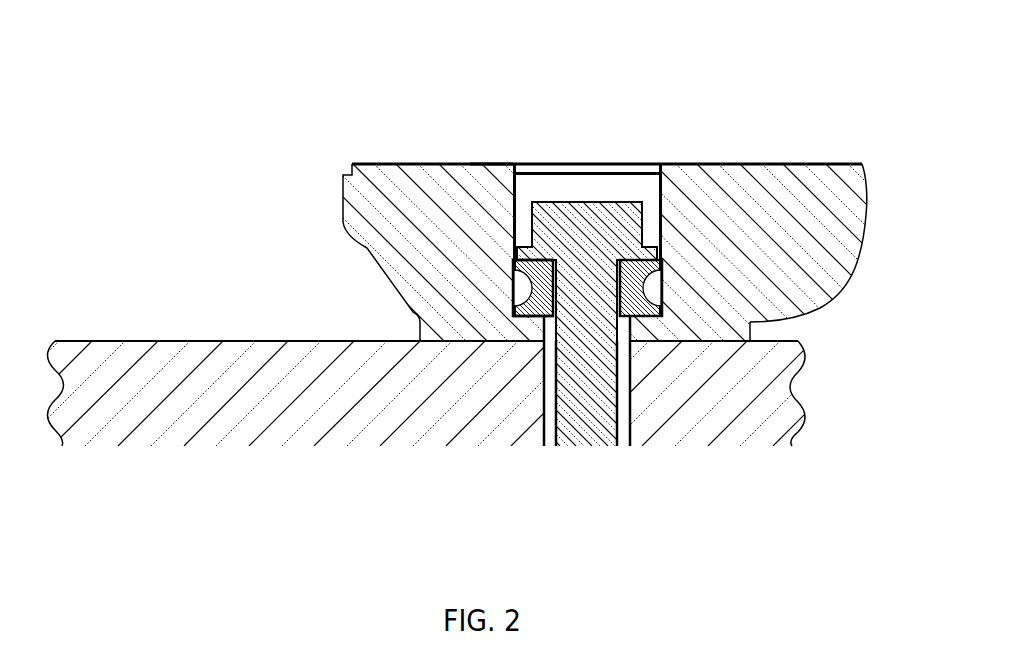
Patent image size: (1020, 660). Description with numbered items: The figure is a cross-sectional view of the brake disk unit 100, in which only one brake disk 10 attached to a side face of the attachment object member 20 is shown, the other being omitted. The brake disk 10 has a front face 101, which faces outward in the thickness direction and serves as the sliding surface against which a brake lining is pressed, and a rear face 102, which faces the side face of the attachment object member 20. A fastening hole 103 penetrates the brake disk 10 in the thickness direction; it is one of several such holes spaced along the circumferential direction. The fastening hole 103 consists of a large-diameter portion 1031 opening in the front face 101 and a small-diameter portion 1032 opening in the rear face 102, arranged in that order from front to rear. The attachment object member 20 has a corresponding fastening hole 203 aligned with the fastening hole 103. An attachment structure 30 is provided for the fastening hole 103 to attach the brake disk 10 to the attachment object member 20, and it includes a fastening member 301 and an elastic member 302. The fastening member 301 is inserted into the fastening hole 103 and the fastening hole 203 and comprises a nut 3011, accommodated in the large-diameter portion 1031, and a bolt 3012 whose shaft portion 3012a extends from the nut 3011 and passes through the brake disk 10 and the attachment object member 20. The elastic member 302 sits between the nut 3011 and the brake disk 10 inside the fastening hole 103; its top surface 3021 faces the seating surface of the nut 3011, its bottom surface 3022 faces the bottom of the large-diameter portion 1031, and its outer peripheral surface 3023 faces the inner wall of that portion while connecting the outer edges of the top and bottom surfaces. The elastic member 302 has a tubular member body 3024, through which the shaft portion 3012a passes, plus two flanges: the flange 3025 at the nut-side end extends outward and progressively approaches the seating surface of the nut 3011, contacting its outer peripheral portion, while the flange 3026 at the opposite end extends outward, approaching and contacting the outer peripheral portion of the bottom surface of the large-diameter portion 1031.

The brake disk unit 100 is at (845, 57).
The brake disk 10 is at (843, 152).
The front face 101 is at (384, 163).
The rear face 102 is at (445, 344).
The fastening hole 103 is at (520, 188).
The large-diameter portion 1031 is at (640, 201).
The small-diameter portion 1032 is at (609, 311).
The nut 3011 is at (490, 164).
The bolt 3012 is at (751, 330).
The shaft portion 3012a is at (632, 366).
The attachment object member 20 is at (104, 340).
The fastening hole 203 is at (622, 342).
The attachment structure 30 is at (604, 237).
The fastening member 301 is at (662, 228).
The elastic member 302 is at (660, 273).
The top surface 3021 is at (545, 246).
The bottom surface 3022 is at (541, 343).
The outer peripheral surface 3023 is at (660, 290).
The member body 3024 is at (513, 278).
The flange 3025 is at (512, 268).
The flange 3026 is at (512, 306).